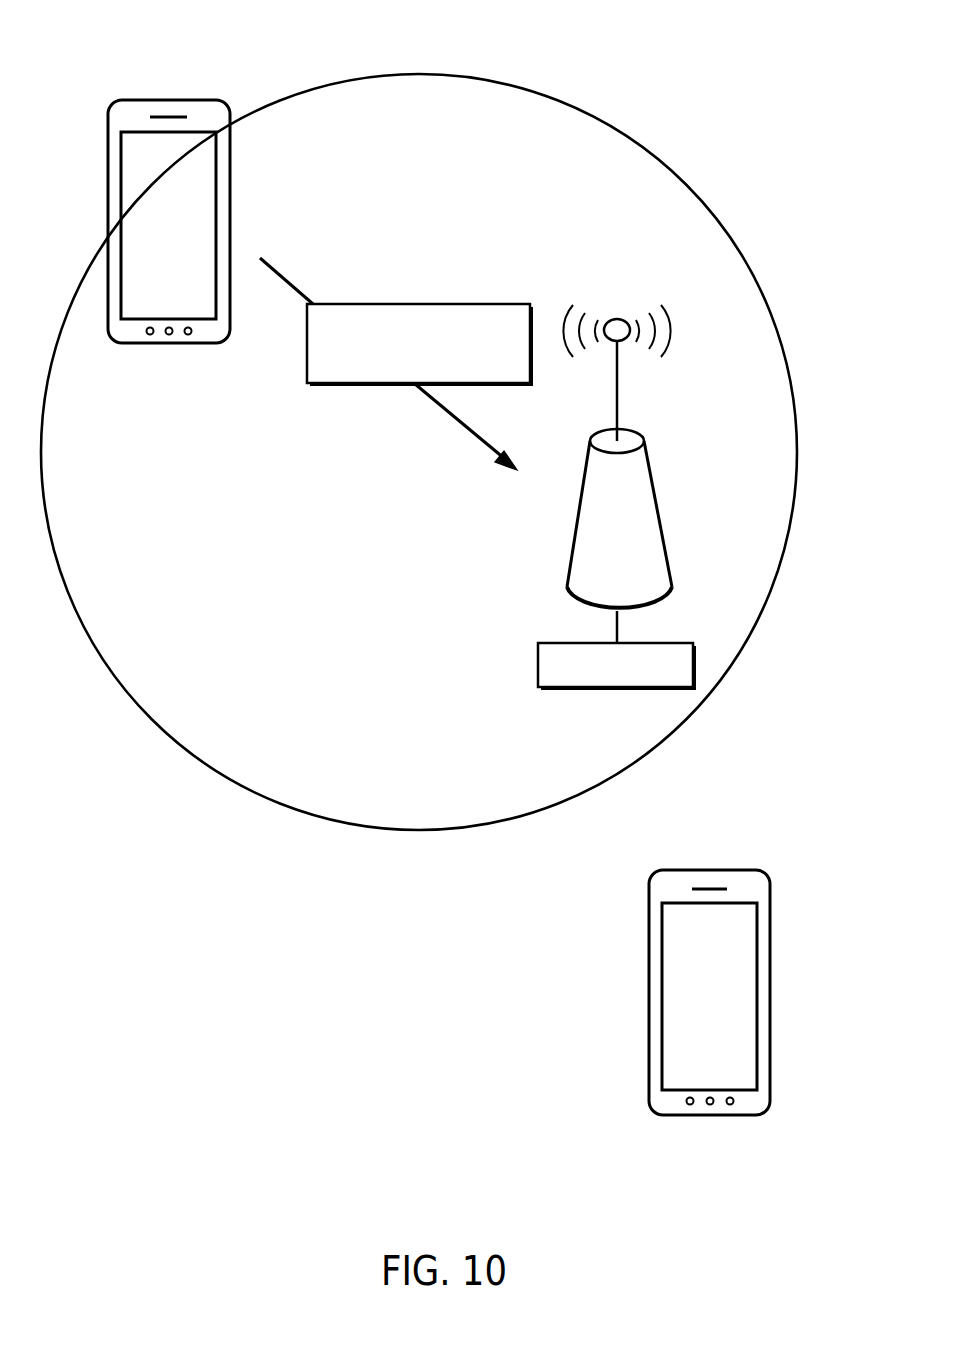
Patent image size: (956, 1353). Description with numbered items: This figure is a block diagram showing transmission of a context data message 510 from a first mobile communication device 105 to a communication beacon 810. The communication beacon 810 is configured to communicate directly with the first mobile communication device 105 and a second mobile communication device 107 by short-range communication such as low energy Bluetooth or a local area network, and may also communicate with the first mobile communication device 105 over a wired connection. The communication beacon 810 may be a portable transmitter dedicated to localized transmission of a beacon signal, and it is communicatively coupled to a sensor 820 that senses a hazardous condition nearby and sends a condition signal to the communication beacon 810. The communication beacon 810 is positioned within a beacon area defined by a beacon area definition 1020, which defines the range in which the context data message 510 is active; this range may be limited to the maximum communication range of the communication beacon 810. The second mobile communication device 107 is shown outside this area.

The first mobile communication device 105 is at (231, 201).
The second mobile communication device 107 is at (771, 993).
The context data message 510 is at (307, 342).
The communication beacon 810 is at (578, 510).
The sensor 820 is at (538, 664).
The beacon area definition 1020 is at (656, 150).